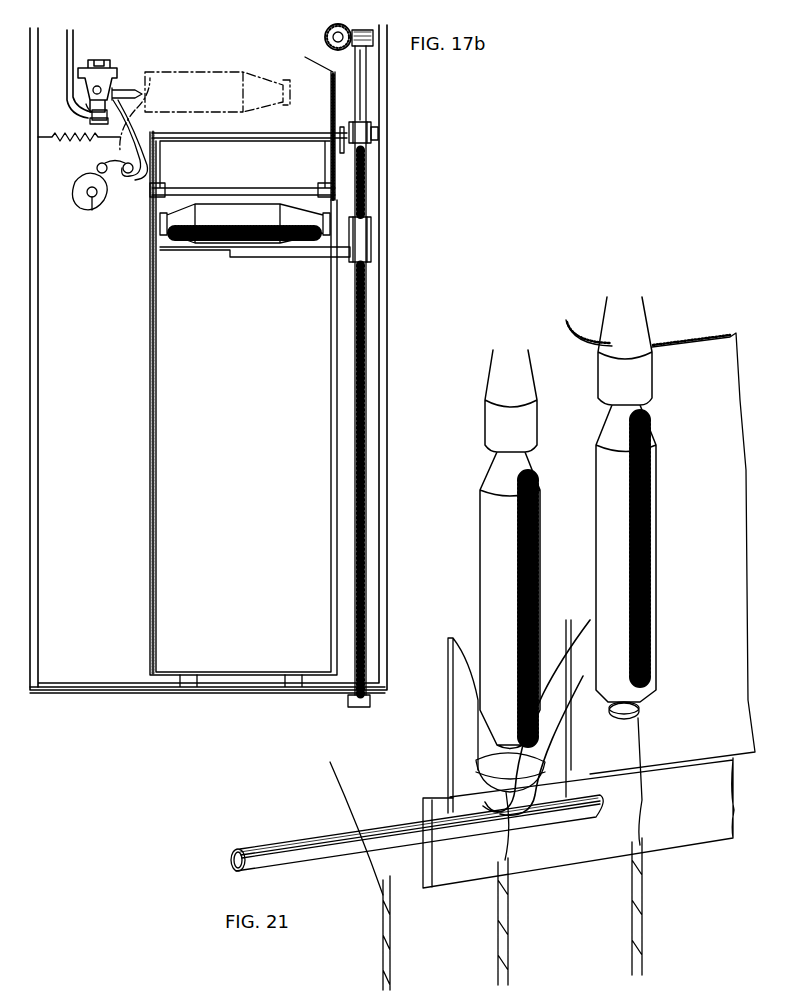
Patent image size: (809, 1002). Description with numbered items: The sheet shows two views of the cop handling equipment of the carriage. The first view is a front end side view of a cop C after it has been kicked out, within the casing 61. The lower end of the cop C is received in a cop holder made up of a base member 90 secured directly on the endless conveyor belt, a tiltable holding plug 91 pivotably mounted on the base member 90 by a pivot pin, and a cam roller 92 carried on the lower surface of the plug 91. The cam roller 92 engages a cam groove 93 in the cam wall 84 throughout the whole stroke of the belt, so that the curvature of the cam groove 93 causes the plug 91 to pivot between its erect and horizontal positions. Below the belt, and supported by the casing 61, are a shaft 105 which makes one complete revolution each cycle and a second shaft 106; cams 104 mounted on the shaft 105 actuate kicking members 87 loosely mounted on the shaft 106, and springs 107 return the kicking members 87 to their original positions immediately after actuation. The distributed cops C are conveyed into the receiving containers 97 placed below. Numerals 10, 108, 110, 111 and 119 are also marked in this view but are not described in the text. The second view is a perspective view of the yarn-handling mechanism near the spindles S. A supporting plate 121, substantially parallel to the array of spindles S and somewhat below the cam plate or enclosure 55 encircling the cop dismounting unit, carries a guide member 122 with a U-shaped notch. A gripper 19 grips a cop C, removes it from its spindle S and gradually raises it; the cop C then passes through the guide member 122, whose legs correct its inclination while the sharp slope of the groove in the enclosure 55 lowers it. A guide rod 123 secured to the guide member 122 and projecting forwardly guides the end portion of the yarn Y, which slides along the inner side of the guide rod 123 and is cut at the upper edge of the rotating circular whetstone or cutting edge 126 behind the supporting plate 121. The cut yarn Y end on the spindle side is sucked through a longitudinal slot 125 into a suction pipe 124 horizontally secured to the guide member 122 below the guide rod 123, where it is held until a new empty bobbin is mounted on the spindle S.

In FIG. 17b, the pulley 10 is at (316, 60).
In FIG. 21, the gripper 19 is at (492, 428).
In FIG. 21, the cam plate or enclosure 55 is at (746, 643).
In FIG. 17b, the casing 61 is at (387, 306).
In FIG. 17b, the cam wall 84 is at (73, 42).
In FIG. 17b, the kicking member 87 is at (248, 155).
In FIG. 17b, the base member 90 is at (112, 66).
In FIG. 17b, the tiltable holding plug 91 is at (128, 86).
In FIG. 17b, the cam roller 92 is at (86, 110).
In FIG. 17b, the cam groove 93 is at (92, 122).
In FIG. 17b, the receiving container 97 is at (150, 338).
In FIG. 17b, the cam 104 is at (78, 200).
In FIG. 17b, the shaft 105 is at (94, 212).
In FIG. 17b, the shaft 106 is at (138, 185).
In FIG. 17b, the spring 107 is at (88, 142).
In FIG. 17b, the bobbin 108 is at (160, 248).
In FIG. 17b, the plate 110 is at (276, 258).
In FIG. 17b, the lead screw 111 is at (362, 178).
In FIG. 17b, the base plate 119 is at (202, 694).
In FIG. 21, the supporting plate 121 is at (724, 790).
In FIG. 21, the guide member 122 is at (452, 778).
In FIG. 21, the guide rod 123 is at (548, 812).
In FIG. 21, the suction pipe 124 is at (298, 855).
In FIG. 21, the longitudinal slot 125 is at (306, 848).
In FIG. 21, the circular whetstone or cutting edge 126 is at (485, 756).
In FIG. 17b, the cop C is at (208, 74).
In FIG. 21, the yarn Y is at (508, 835).
In FIG. 21, the spindle S is at (508, 932).